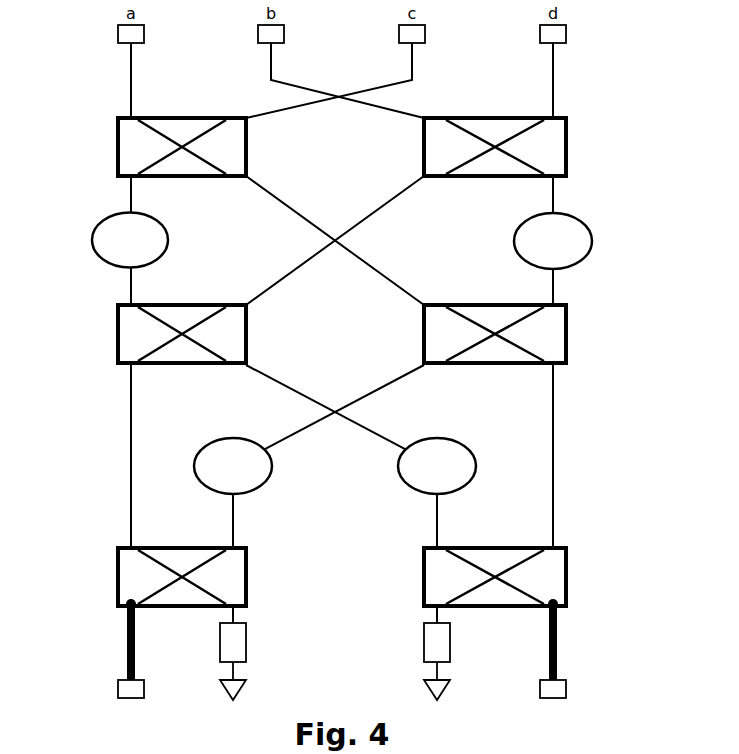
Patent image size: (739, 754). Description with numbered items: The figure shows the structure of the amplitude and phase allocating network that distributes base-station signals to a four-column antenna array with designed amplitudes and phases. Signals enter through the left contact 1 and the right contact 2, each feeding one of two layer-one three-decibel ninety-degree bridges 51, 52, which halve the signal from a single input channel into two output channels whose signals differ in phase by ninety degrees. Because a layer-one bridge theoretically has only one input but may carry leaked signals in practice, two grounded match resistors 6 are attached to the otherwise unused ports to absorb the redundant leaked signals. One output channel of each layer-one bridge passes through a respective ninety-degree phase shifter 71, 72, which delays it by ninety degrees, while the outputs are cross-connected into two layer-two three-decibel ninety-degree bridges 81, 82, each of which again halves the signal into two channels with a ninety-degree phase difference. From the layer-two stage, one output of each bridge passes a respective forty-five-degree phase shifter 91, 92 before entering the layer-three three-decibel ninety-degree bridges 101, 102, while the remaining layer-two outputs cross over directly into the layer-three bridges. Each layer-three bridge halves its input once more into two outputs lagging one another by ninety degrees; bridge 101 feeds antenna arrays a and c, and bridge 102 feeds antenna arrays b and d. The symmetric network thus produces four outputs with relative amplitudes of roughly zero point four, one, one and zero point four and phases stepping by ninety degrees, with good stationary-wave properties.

The layer-3 3-decibel 90-degree bridge 101 is at (118, 146).
The layer-3 3-decibel 90-degree bridge 102 is at (566, 150).
The 45-degree phase shifter 91 is at (168, 240).
The 45-degree phase shifter 92 is at (514, 241).
The layer-2 3-decibel 90-degree bridge 81 is at (118, 333).
The layer-2 3-decibel 90-degree bridge 82 is at (566, 342).
The 90-degree phase shifter 71 is at (270, 478).
The 90-degree phase shifter 72 is at (400, 476).
The layer-1 3-decibel 90-degree bridge 51 is at (118, 577).
The layer-1 3-decibel 90-degree bridge 52 is at (566, 585).
The grounded match resistor 6 is at (246, 644).
The left contact 1 is at (118, 684).
The right contact 2 is at (566, 696).